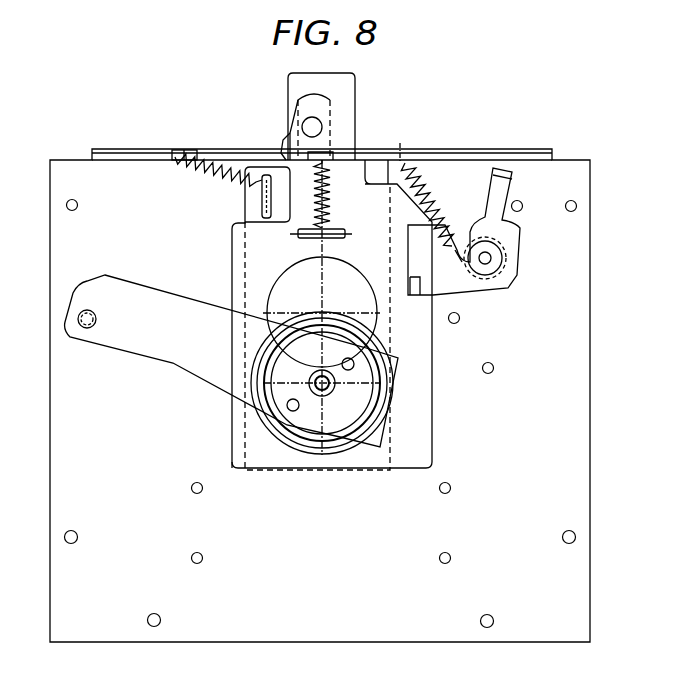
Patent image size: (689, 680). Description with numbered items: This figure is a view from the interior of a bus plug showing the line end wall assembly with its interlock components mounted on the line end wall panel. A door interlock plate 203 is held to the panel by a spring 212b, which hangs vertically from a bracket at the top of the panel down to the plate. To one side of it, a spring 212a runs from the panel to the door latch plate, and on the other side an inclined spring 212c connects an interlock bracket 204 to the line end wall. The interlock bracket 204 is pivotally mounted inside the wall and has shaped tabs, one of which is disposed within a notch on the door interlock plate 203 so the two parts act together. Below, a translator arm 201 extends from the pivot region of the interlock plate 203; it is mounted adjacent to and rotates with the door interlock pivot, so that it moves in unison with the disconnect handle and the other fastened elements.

The translator arm 201 is at (143, 275).
The door interlock plate 203 is at (367, 184).
The interlock bracket 204 is at (500, 185).
The spring 212a is at (232, 160).
The spring 212b is at (327, 167).
The spring 212c is at (420, 157).